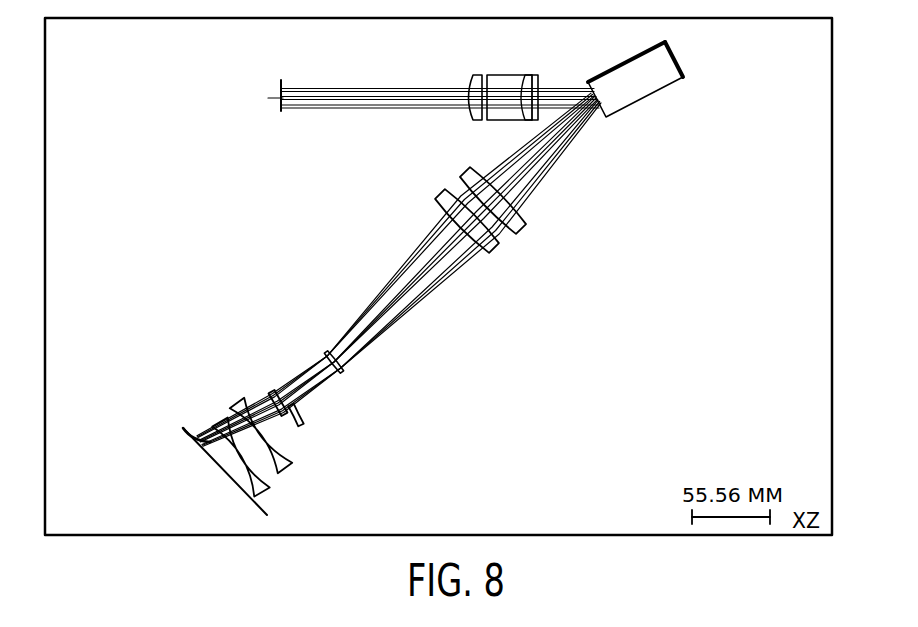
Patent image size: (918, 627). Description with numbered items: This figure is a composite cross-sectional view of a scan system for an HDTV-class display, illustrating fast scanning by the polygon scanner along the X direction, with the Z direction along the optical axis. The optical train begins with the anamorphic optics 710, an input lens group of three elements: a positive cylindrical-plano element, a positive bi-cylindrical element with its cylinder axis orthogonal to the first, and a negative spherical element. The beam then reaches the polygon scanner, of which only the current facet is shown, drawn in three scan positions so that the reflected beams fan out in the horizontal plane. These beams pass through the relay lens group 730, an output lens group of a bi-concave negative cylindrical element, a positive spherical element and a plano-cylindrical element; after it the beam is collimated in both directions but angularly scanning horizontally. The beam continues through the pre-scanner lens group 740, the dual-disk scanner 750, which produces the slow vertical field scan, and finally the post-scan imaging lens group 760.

The anamorphic optics 710 is at (545, 68).
The relay lens group 730 is at (535, 226).
The pre-scanner lens group 740 is at (283, 444).
The dual-disk scanner 750 is at (256, 503).
The post-scan imaging lens group 760 is at (184, 430).